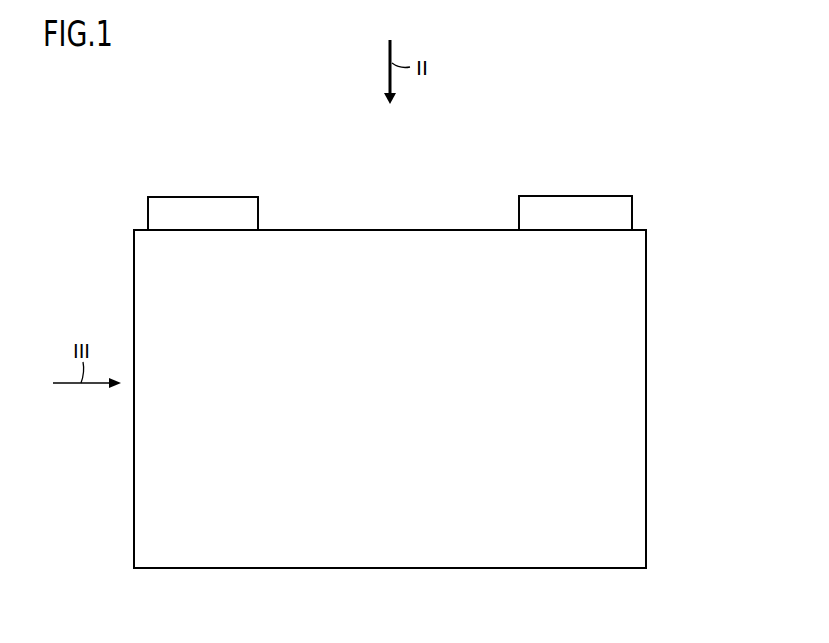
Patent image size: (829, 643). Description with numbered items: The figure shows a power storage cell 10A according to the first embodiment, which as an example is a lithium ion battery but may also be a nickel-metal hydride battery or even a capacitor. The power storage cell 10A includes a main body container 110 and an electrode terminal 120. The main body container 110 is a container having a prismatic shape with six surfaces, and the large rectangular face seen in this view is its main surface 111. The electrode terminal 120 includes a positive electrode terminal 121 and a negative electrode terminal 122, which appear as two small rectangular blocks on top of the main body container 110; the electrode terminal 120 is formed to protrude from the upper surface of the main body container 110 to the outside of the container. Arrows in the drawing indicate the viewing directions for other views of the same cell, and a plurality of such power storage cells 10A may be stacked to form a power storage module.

The power storage cell 10A is at (105, 213).
The main body container 110 is at (656, 325).
The main surface 111 is at (628, 433).
The electrode terminal 120 is at (599, 155).
The positive electrode terminal 121 is at (202, 208).
The negative electrode terminal 122 is at (574, 208).